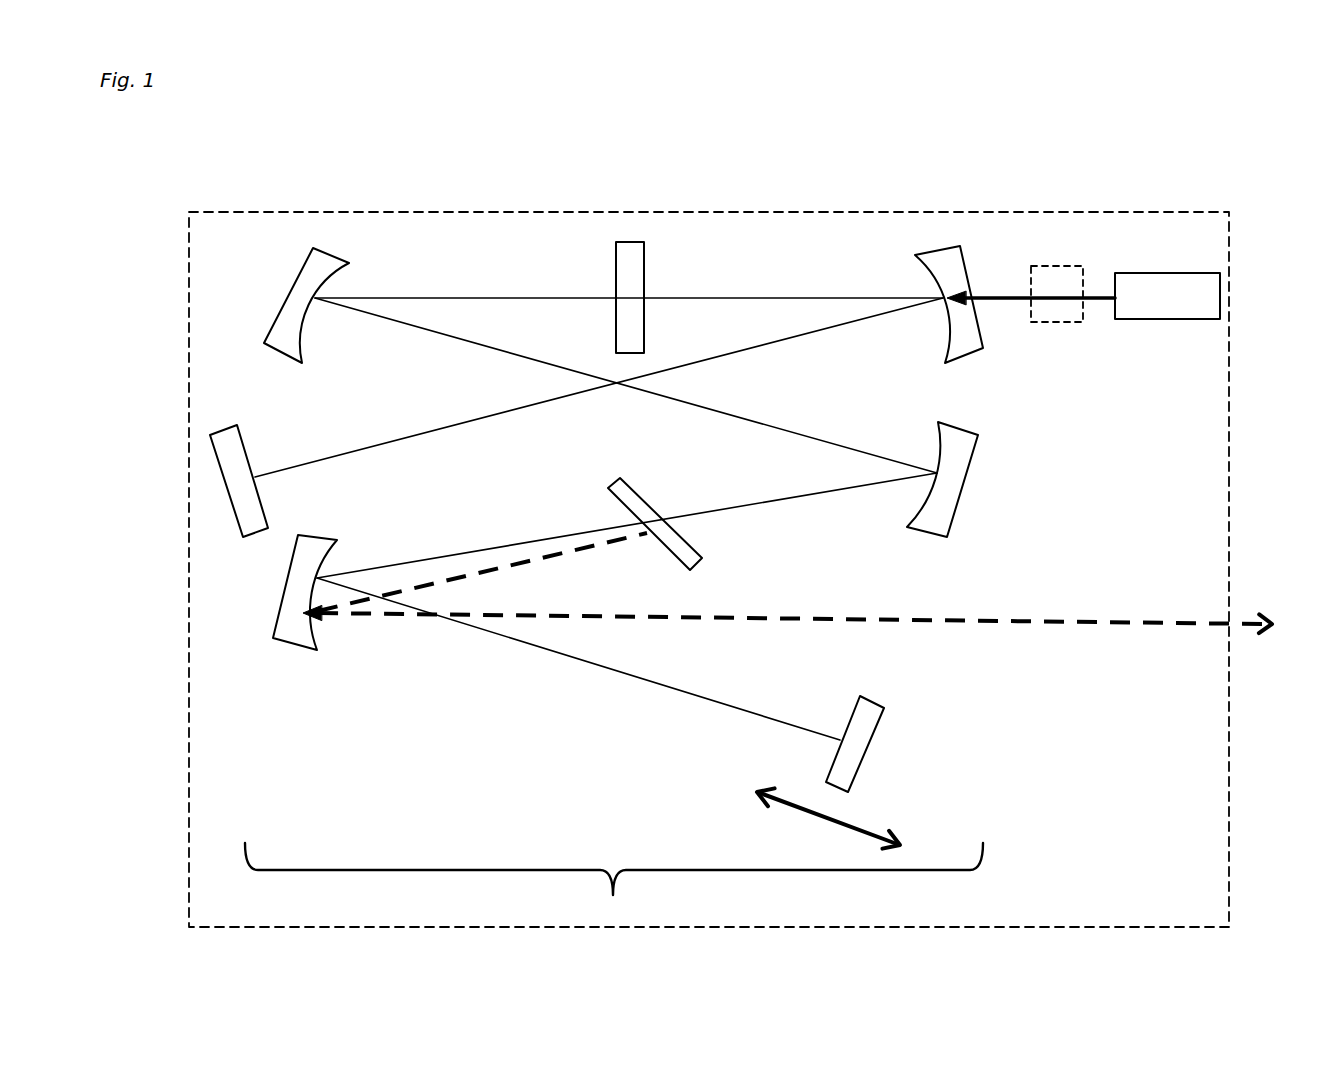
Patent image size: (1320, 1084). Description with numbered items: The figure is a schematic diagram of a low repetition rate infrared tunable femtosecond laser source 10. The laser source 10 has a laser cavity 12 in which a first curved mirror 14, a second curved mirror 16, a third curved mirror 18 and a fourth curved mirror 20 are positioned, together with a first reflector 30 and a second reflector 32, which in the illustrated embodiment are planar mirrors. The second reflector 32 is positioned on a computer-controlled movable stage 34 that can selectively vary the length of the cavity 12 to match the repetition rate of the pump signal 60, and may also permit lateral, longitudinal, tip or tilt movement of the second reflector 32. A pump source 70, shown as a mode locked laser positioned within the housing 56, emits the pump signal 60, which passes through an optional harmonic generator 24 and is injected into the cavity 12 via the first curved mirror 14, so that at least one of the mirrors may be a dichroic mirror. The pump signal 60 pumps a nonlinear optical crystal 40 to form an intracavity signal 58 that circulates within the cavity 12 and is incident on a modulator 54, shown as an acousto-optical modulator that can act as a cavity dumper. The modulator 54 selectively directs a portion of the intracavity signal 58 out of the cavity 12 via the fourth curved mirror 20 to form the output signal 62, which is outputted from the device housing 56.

The laser source 10 is at (1138, 190).
The laser cavity 12 is at (614, 883).
The first curved mirror 14 is at (953, 255).
The second curved mirror 16 is at (319, 269).
The third curved mirror 18 is at (953, 522).
The fourth curved mirror 20 is at (285, 613).
The harmonic generator 24 is at (1052, 318).
The first reflector 30 is at (233, 442).
The second reflector 32 is at (868, 740).
The movable stage 34 is at (860, 827).
The nonlinear optical crystal 40 is at (642, 263).
The modulator 54 is at (645, 513).
The housing 56 is at (523, 212).
The intracavity signal 58 is at (828, 437).
The pump signal 60 is at (990, 297).
The output signal 62 is at (1250, 618).
The pump source 70 is at (1197, 315).